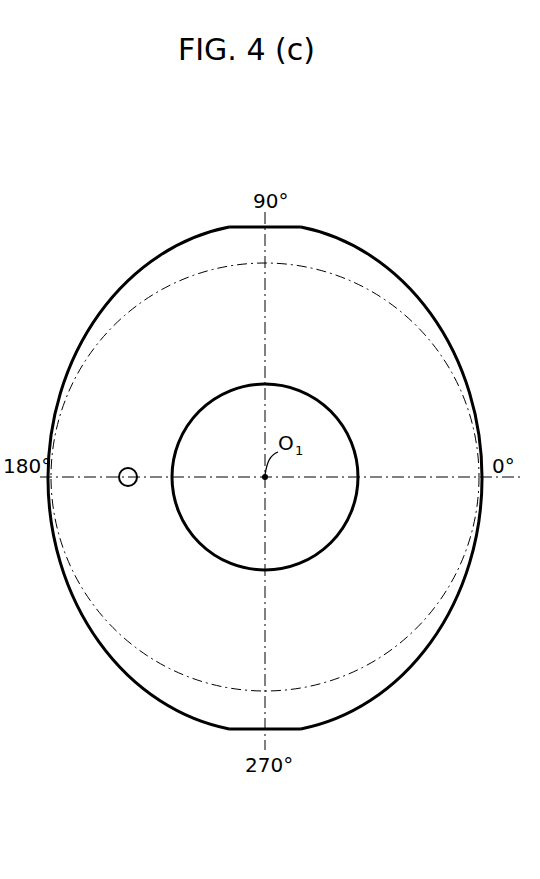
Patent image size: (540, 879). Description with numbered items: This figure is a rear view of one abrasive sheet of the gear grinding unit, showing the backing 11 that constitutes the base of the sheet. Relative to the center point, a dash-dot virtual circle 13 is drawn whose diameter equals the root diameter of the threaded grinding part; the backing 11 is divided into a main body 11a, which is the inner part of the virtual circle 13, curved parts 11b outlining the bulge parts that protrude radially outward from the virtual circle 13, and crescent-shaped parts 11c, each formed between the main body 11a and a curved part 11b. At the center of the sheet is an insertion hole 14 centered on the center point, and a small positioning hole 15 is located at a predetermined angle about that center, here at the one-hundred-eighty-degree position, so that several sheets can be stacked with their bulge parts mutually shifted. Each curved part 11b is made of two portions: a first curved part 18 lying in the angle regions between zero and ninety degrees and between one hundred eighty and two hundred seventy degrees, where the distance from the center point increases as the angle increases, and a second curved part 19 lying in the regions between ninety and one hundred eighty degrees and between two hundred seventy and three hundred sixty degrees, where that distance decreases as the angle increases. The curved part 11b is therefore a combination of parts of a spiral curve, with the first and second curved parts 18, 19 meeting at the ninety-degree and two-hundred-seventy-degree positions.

The backing 11 is at (265, 459).
The main body 11a is at (390, 340).
The curved part 11b is at (313, 168).
The crescent-shaped part 11c is at (335, 255).
The virtual circle 13 is at (168, 285).
The insertion hole 14 is at (306, 552).
The positioning hole 15 is at (123, 470).
The first curved part 18 is at (301, 227).
The second curved part 19 is at (263, 479).